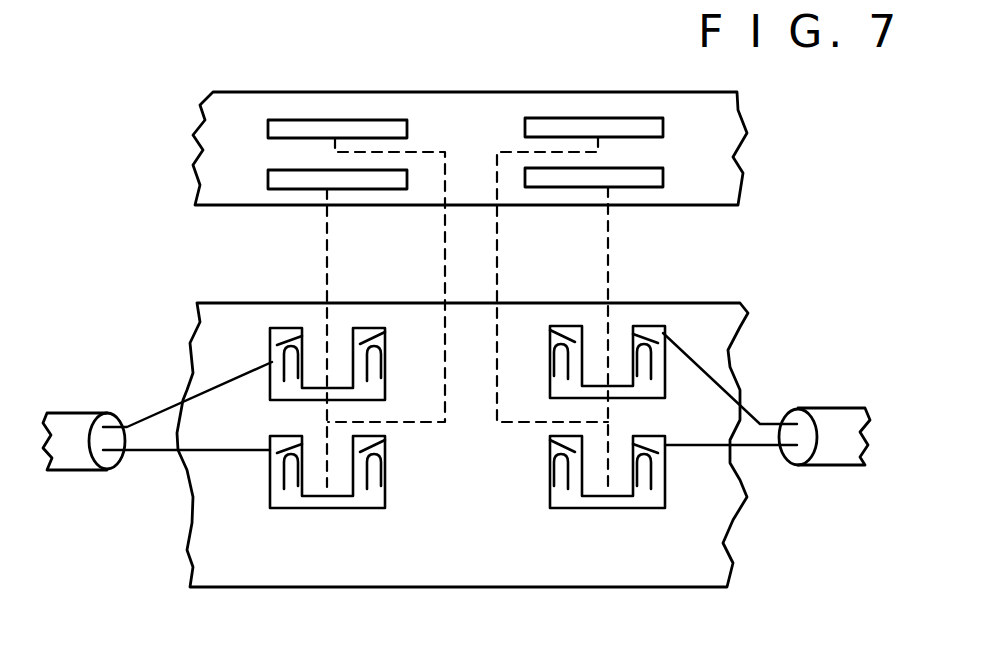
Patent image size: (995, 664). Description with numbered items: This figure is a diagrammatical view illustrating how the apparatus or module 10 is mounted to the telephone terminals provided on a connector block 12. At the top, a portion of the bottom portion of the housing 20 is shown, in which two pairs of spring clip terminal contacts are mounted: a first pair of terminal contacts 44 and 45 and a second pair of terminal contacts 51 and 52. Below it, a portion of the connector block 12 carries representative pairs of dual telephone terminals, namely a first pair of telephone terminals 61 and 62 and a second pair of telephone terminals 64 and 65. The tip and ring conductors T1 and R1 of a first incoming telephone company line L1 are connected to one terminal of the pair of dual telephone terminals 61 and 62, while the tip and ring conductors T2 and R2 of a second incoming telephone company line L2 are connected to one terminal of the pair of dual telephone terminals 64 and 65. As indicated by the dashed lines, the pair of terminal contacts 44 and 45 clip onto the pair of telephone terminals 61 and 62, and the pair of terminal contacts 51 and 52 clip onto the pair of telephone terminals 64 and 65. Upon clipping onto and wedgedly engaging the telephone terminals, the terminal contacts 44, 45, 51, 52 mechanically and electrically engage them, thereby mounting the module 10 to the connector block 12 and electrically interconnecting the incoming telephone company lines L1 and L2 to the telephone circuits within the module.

The apparatus or module 10 is at (243, 78).
The housing 20 is at (482, 92).
The connector block 12 is at (493, 590).
The spring clip terminal contact 44 is at (360, 127).
The spring clip terminal contact 45 is at (296, 183).
The spring clip terminal contact 51 is at (617, 122).
The spring clip terminal contact 52 is at (640, 180).
The telephone terminal 61 is at (275, 345).
The telephone terminal 62 is at (270, 475).
The telephone terminal 64 is at (665, 490).
The telephone terminal 65 is at (665, 333).
The first incoming telephone company line L1 is at (70, 413).
The second incoming telephone company line L2 is at (843, 408).
The ring conductor R1 is at (163, 408).
The ring conductor R2 is at (758, 418).
The tip conductor T1 is at (151, 452).
The tip conductor T2 is at (762, 452).